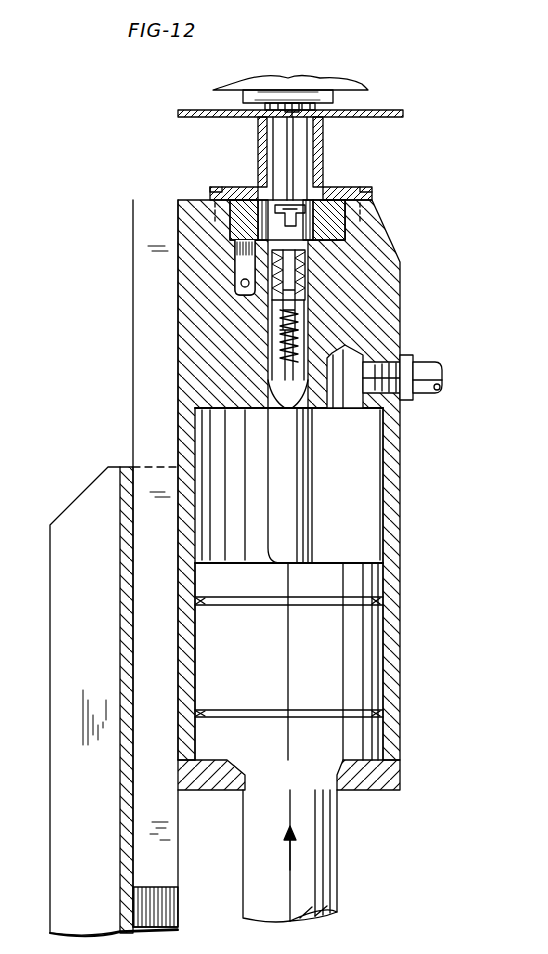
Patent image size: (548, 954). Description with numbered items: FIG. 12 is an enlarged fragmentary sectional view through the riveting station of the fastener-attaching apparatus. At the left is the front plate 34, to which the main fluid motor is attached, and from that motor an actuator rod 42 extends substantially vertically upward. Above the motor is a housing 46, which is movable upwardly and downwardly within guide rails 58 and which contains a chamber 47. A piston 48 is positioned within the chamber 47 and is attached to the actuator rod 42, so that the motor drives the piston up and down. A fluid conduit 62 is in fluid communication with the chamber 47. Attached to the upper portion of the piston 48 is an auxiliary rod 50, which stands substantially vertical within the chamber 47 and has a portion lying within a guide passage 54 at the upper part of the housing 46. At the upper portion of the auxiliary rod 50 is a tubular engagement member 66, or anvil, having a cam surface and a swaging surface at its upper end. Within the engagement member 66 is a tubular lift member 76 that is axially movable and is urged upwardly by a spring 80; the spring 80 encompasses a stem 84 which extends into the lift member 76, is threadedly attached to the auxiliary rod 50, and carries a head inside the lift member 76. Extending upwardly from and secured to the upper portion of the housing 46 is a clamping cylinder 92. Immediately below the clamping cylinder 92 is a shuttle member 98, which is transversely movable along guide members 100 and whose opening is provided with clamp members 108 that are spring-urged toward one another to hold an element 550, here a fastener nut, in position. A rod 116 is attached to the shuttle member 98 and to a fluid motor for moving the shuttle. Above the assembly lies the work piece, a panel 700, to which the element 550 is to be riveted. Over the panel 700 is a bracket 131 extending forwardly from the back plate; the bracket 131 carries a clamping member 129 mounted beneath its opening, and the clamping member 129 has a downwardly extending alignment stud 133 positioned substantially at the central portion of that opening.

The clamping member 129 is at (257, 94).
The alignment stud 133 is at (292, 104).
The bracket 131 is at (334, 84).
The panel 700 is at (376, 110).
The clamping cylinder 92 is at (258, 136).
The clamp members 108 is at (260, 195).
The elements 550 is at (292, 202).
The guide members 100 is at (232, 222).
The shuttle member 98 is at (352, 239).
The rod 116 is at (241, 283).
The tubular engagement member 66 is at (308, 273).
The tubular lift member 76 is at (283, 300).
The guide passage 54 is at (312, 308).
The spring 80 is at (292, 336).
The fluid conduit 62 is at (421, 378).
The stem 84 is at (287, 383).
The chamber 47 is at (372, 455).
The auxiliary rod 50 is at (303, 484).
The housing 46 is at (398, 515).
The piston 48 is at (258, 665).
The front plate 34 is at (92, 854).
The guide rails 58 is at (165, 906).
The actuator rod 42 is at (322, 841).